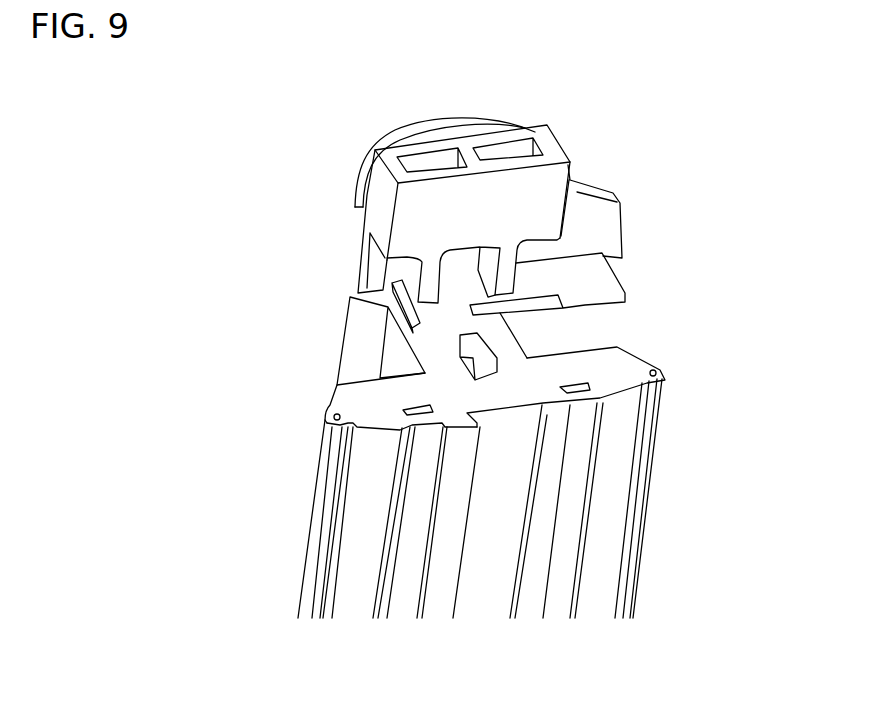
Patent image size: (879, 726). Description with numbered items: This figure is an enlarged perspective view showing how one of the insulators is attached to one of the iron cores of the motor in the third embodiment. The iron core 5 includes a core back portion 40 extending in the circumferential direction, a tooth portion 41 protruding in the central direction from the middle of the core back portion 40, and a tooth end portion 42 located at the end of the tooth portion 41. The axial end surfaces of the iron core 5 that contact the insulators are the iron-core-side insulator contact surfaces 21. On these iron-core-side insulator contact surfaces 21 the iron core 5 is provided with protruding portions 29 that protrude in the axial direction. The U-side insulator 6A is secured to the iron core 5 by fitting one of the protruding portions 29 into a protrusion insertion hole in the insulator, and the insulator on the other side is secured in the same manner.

The U-side insulator 6A is at (603, 213).
The tooth end portion 42 is at (350, 297).
The tooth portion 41 is at (397, 362).
The protruding portions 29 is at (480, 348).
The iron-core-side insulator contact surfaces 21 is at (363, 402).
The core back portion 40 is at (650, 503).
The iron core 5 is at (283, 502).